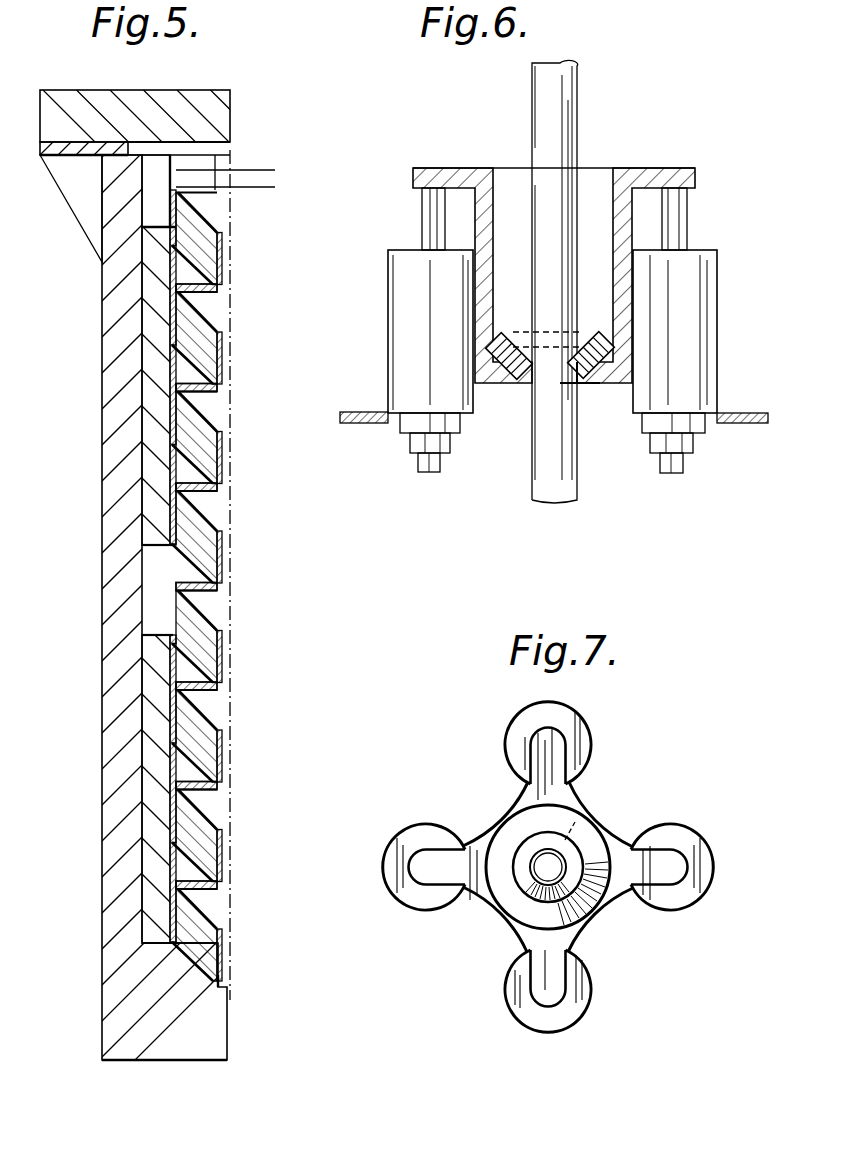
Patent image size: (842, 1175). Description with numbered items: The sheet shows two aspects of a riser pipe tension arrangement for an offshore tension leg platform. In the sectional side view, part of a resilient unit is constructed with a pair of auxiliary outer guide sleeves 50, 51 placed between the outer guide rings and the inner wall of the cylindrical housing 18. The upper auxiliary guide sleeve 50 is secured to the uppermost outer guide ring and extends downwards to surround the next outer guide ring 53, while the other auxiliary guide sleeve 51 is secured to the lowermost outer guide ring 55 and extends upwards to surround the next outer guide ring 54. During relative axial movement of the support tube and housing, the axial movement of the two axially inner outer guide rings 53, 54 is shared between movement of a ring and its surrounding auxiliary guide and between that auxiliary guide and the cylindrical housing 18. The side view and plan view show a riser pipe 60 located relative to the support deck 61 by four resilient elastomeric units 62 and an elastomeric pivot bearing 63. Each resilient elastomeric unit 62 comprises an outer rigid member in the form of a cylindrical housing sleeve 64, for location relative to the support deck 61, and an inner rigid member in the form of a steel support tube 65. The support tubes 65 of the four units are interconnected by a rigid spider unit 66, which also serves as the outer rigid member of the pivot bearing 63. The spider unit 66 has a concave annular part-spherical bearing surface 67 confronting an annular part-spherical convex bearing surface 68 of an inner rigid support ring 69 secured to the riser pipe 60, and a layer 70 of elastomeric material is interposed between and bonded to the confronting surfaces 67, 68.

In FIG. 5, the cylindrical housing 18 is at (122, 623).
In FIG. 5, the upper auxiliary guide sleeve 50 is at (155, 376).
In FIG. 5, the lower auxiliary guide sleeve 51 is at (150, 742).
In FIG. 5, the outer guide ring 53 is at (218, 443).
In FIG. 5, the outer guide ring 54 is at (176, 668).
In FIG. 5, the lowermost outer guide ring 55 is at (176, 273).
In FIG. 6, the riser pipe 60 is at (560, 97).
In FIG. 7, the riser pipe 60 is at (565, 850).
In FIG. 6, the support deck 61 is at (370, 424).
In FIG. 6, the resilient elastomeric unit 62 is at (386, 356).
In FIG. 7, the resilient elastomeric unit 62 is at (623, 722).
In FIG. 6, the elastomeric pivot bearing 63 is at (584, 392).
In FIG. 7, the elastomeric pivot bearing 63 is at (583, 810).
In FIG. 6, the cylindrical housing sleeve 64 is at (697, 392).
In FIG. 6, the steel support tube 65 is at (677, 228).
In FIG. 6, the rigid spider unit 66 is at (672, 168).
In FIG. 7, the rigid spider unit 66 is at (500, 815).
In FIG. 6, the concave annular bearing surface 67 is at (507, 336).
In FIG. 6, the convex bearing surface 68 is at (527, 336).
In FIG. 6, the inner rigid support ring 69 is at (580, 333).
In FIG. 7, the inner rigid support ring 69 is at (522, 858).
In FIG. 6, the elastomeric layer 70 is at (603, 389).
In FIG. 7, the elastomeric layer 70 is at (578, 897).